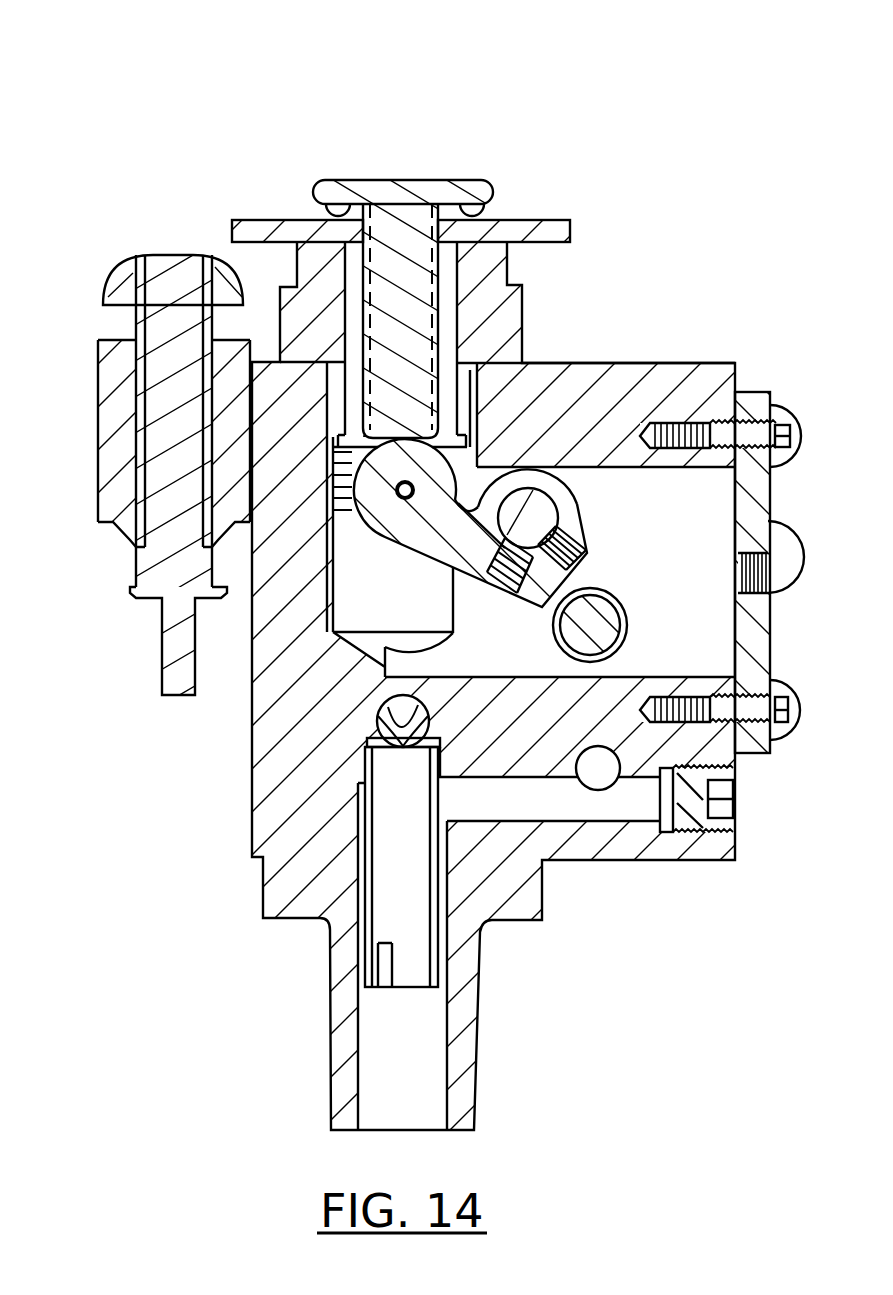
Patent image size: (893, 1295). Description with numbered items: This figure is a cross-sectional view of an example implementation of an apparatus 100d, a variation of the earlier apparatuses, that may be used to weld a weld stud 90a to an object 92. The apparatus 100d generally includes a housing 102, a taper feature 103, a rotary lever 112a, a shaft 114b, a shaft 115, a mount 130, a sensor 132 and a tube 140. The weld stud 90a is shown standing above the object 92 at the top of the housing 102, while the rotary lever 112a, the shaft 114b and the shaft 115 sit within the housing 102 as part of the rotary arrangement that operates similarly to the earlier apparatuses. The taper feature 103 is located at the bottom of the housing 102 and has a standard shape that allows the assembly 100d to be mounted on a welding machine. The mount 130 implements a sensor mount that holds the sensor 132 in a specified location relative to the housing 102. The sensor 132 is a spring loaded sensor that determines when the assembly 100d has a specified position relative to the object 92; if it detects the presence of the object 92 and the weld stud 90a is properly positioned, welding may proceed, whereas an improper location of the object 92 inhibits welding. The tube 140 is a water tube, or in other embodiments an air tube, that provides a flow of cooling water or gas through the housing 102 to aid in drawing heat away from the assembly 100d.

The apparatus 100d is at (303, 48).
The weld stud 90a is at (387, 180).
The object 92 is at (268, 221).
The housing 102 is at (681, 364).
The taper feature 103 is at (477, 1030).
The rotary lever 112a is at (440, 545).
The shaft 114b is at (607, 599).
The shaft 115 is at (548, 514).
The mount 130 is at (97, 410).
The sensor 132 is at (152, 601).
The tube 140 is at (380, 897).